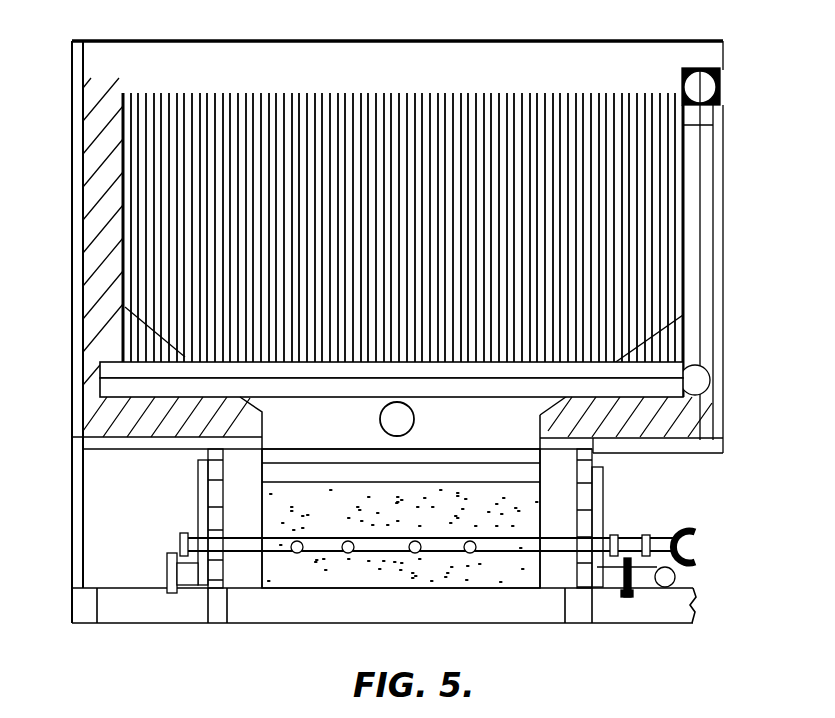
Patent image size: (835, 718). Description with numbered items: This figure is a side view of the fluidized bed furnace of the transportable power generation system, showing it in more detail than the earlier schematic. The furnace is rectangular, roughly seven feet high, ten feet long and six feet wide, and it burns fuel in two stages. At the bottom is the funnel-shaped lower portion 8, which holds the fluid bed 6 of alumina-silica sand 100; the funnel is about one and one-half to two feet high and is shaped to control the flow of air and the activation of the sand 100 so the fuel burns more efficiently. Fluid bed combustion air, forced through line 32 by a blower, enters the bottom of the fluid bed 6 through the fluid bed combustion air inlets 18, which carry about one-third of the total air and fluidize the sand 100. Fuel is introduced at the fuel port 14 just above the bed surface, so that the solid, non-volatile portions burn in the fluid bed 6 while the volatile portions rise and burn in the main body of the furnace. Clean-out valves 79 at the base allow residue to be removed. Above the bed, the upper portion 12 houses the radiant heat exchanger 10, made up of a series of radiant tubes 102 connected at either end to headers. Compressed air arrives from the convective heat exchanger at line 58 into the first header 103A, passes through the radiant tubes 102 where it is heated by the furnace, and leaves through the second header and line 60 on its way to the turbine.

The radiant tubes 102 is at (223, 93).
The line 58 is at (705, 85).
The radiant heat exchanger 10 is at (122, 260).
The upper portion 12 is at (725, 270).
The line 60 is at (105, 368).
The first header 103A is at (135, 382).
The fuel port 14 is at (414, 411).
The lower portion 8 is at (565, 500).
The line 32 is at (697, 552).
The clean-out valves 79 is at (185, 588).
The fluid bed combustion air inlets 18 is at (297, 553).
The fluid bed 6 is at (490, 568).
The sand 100 is at (508, 522).